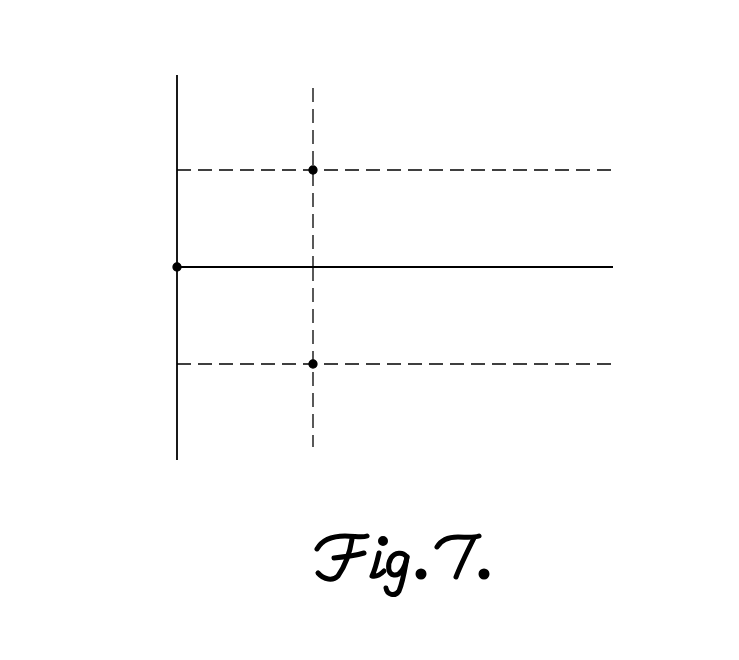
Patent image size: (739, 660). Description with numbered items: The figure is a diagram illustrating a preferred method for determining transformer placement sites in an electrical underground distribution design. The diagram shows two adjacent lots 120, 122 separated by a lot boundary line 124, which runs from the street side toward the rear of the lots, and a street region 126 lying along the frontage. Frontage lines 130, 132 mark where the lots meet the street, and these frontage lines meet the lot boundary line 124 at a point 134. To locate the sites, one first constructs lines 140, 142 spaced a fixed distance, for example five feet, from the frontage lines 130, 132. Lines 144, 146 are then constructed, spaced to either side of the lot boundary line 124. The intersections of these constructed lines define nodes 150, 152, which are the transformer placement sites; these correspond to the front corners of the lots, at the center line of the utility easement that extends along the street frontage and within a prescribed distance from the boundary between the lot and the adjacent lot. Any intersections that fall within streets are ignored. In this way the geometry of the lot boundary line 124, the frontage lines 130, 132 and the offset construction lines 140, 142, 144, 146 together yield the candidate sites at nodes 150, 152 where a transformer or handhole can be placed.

The upper region 120 is at (468, 103).
The lower region 122 is at (468, 488).
The lot boundary line 124 is at (583, 267).
The left region 126 is at (98, 254).
The frontage line 130 is at (177, 115).
The frontage line 132 is at (177, 333).
The intersection point 134 is at (177, 267).
The line 140 is at (312, 108).
The line 142 is at (312, 428).
The line 144 is at (543, 170).
The line 146 is at (547, 364).
The node 150 is at (313, 170).
The node 152 is at (313, 364).